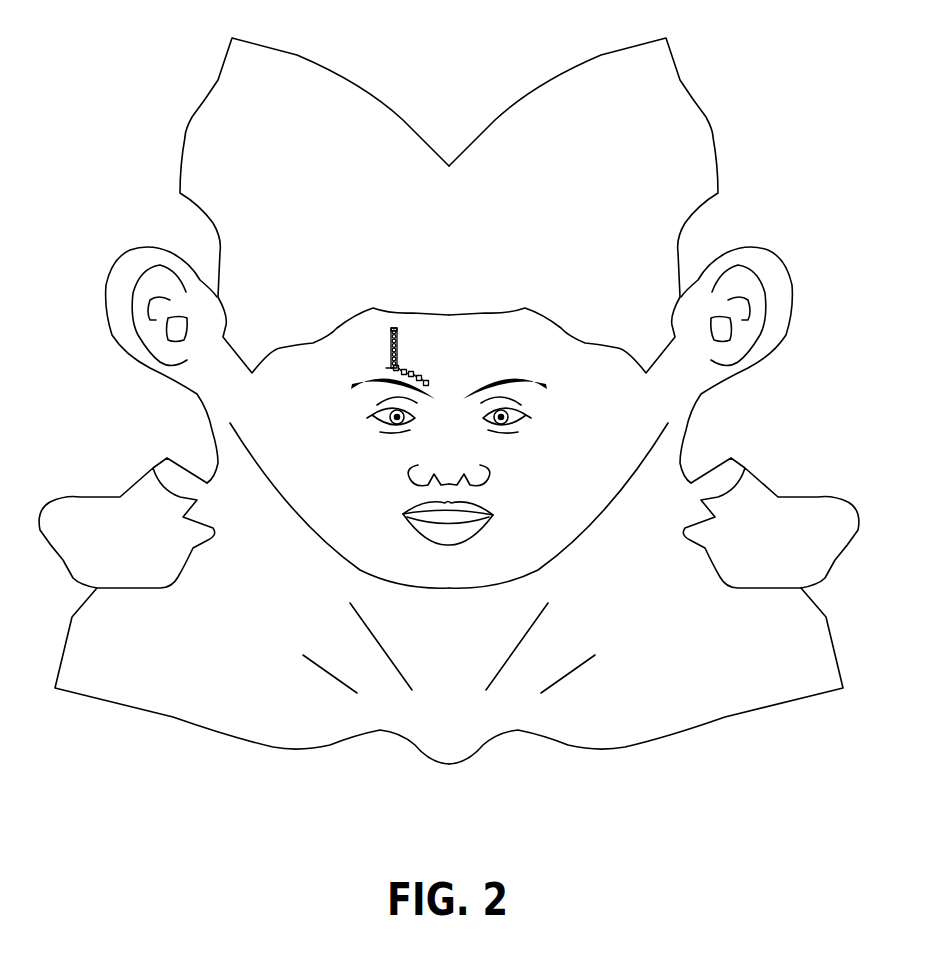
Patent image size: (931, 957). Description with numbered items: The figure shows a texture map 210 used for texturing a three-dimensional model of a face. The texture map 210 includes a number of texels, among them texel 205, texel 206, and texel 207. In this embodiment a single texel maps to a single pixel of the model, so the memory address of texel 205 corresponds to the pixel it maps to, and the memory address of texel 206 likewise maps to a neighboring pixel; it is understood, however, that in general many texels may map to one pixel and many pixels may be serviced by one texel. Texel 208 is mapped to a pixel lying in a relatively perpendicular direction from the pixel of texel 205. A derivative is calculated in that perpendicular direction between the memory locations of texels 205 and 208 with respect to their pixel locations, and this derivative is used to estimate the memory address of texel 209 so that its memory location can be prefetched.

The texel 205 is at (384, 367).
The texel 206 is at (391, 348).
The texel 207 is at (391, 330).
The texel 208 is at (409, 370).
The texel 209 is at (430, 381).
The texture map 210 is at (185, 136).